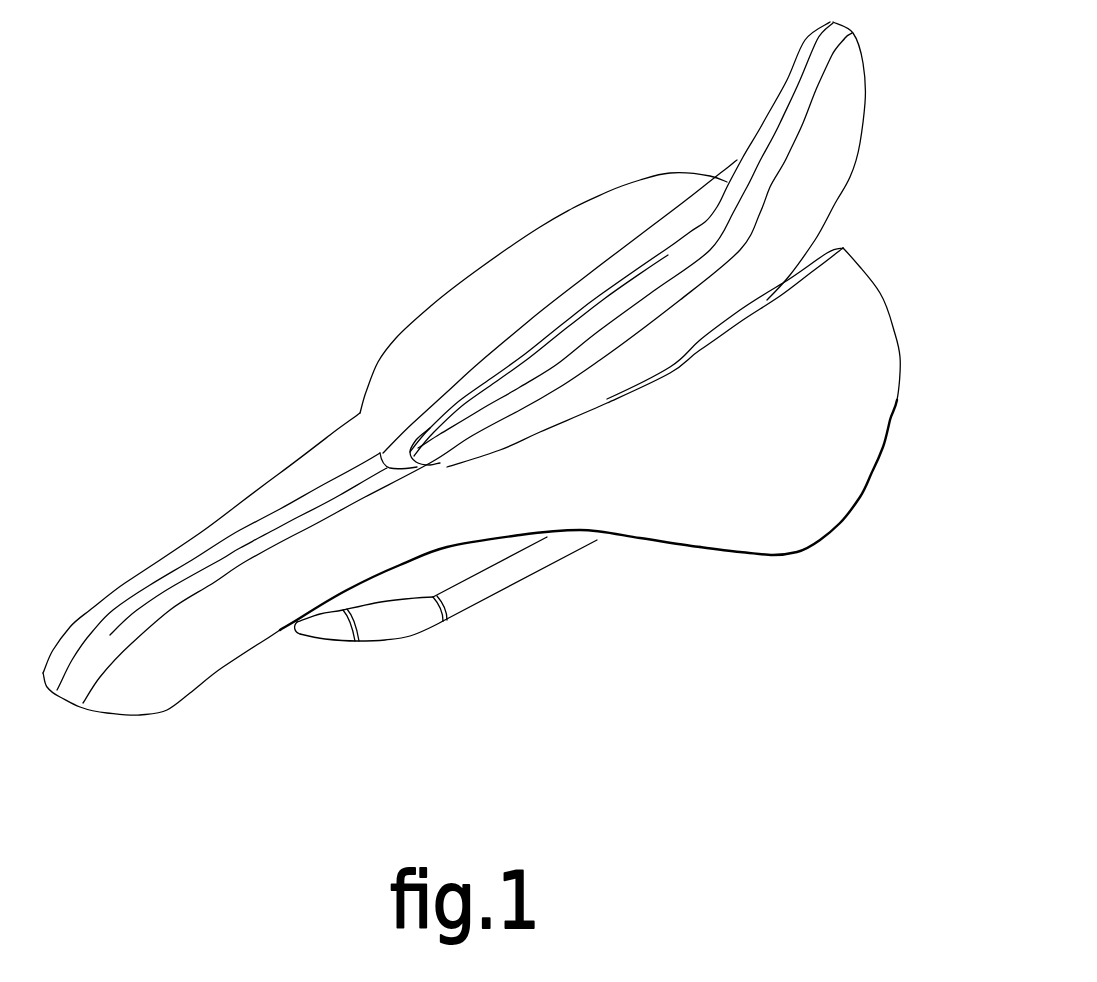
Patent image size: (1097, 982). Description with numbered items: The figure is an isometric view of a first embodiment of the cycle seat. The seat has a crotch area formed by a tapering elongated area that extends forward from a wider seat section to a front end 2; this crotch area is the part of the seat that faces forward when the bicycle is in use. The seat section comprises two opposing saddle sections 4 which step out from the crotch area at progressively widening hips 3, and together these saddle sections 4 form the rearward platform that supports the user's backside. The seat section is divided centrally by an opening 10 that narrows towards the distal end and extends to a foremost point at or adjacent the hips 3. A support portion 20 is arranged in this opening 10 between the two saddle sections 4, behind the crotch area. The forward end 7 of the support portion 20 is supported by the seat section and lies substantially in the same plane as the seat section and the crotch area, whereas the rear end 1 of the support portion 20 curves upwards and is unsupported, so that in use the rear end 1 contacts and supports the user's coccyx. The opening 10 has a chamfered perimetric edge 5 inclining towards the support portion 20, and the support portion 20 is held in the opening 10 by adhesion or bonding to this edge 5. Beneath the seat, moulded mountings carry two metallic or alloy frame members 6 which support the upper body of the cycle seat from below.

The rear end 1 is at (474, 354).
The front end 2 is at (57, 690).
The hips 3 is at (201, 454).
The saddle sections 4 is at (621, 357).
The chamfered perimetric edge 5 is at (612, 306).
The frame members 6 is at (446, 603).
The forward end 7 is at (389, 445).
The opening 10 is at (834, 229).
The support portion 20 is at (709, 205).